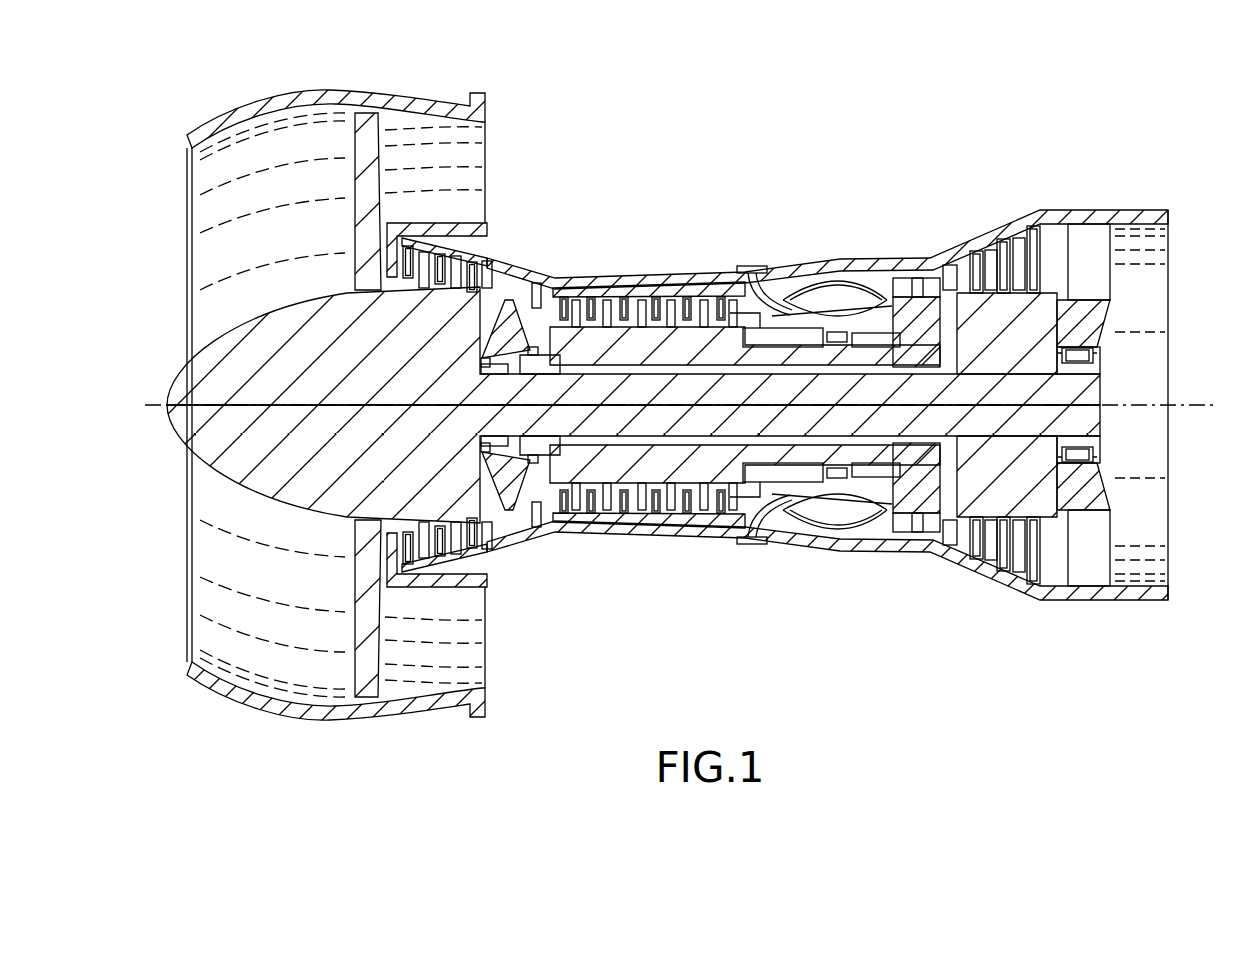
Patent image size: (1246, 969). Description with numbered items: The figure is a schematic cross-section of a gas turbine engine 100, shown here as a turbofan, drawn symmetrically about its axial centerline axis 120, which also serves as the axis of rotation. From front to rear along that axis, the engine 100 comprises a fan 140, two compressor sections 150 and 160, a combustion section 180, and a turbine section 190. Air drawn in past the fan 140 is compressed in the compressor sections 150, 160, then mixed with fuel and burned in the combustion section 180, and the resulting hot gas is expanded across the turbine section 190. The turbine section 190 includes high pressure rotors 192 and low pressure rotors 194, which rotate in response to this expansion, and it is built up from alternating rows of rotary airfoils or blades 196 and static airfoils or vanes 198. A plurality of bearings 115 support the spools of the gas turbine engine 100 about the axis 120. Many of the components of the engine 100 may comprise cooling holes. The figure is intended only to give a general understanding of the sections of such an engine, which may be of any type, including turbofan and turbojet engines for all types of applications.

The gas turbine engine 100 is at (905, 145).
The bearings 115 is at (1097, 354).
The axial centerline axis 120 is at (150, 396).
The fan 140 is at (380, 190).
The compressor section 150 is at (388, 728).
The compressor section 160 is at (553, 548).
The combustion section 180 is at (767, 565).
The turbine section 190 is at (935, 611).
The high pressure rotors 192 is at (935, 280).
The low pressure rotors 194 is at (1040, 320).
The blades 196 is at (990, 258).
The vanes 198 is at (1008, 243).